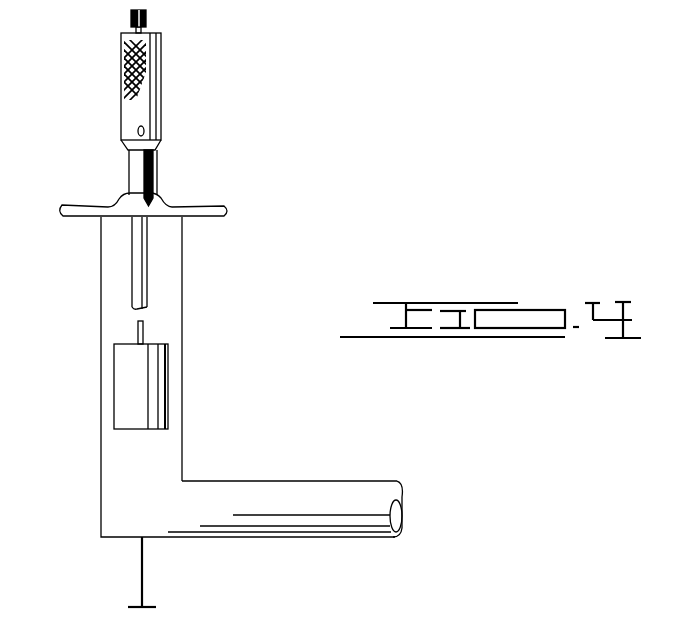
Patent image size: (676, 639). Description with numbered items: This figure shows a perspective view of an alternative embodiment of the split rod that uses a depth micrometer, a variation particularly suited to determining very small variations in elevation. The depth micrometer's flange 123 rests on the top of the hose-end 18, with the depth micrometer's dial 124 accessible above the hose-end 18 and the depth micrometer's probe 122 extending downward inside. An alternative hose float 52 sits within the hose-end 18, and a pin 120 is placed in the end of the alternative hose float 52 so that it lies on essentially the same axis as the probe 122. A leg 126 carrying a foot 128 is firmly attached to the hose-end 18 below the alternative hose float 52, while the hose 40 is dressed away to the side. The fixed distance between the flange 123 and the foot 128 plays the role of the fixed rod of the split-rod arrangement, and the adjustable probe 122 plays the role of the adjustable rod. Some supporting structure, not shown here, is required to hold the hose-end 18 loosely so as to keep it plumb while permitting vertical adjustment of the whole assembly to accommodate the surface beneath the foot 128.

The hose-end 18 is at (101, 402).
The hose 40 is at (318, 481).
The alternative hose float 52 is at (143, 380).
The pin 120 is at (143, 330).
The depth micrometer's probe 122 is at (143, 278).
The depth micrometer's flange 123 is at (215, 205).
The depth micrometer's dial 124 is at (162, 143).
The leg 126 is at (140, 570).
The foot 128 is at (150, 605).